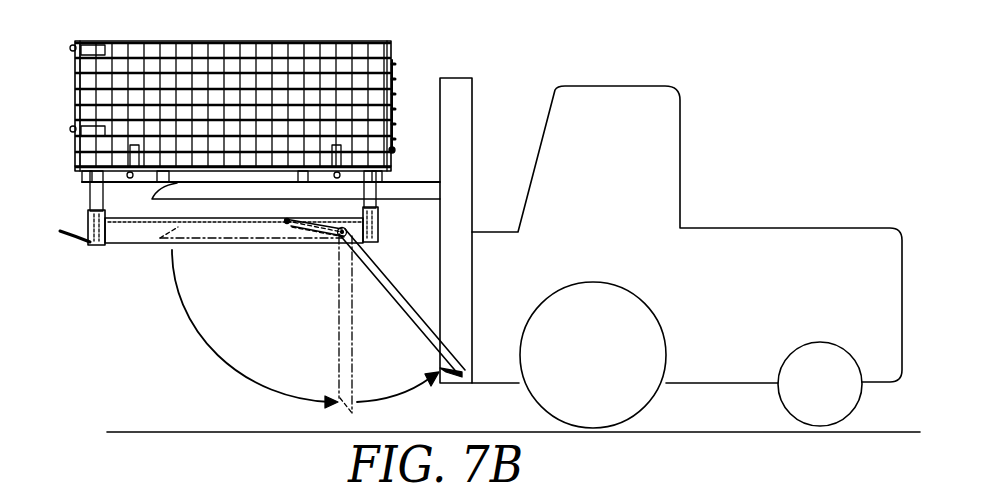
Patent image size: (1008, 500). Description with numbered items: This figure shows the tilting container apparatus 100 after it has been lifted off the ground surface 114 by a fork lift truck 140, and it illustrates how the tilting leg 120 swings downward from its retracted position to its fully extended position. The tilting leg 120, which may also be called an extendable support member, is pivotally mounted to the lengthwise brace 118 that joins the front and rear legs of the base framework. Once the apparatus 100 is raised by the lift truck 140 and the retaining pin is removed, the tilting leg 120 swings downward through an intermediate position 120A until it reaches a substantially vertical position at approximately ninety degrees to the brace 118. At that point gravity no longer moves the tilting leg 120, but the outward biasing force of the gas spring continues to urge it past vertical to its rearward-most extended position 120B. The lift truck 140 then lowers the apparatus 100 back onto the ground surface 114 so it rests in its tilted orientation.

The tilting container apparatus 100 is at (143, 40).
The ground surface 114 is at (163, 432).
The lengthwise brace 118 is at (132, 236).
The tilting leg 120 is at (390, 288).
The intermediate position of tilting leg 120A is at (338, 358).
The final extended position of tilting leg 120B is at (423, 347).
The fork lift truck 140 is at (610, 214).